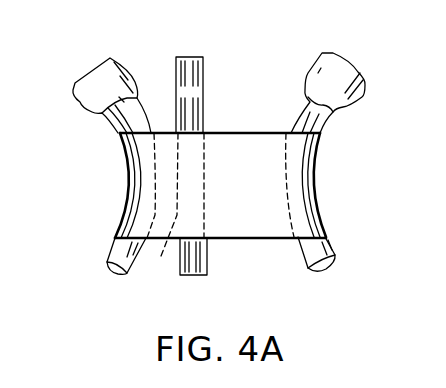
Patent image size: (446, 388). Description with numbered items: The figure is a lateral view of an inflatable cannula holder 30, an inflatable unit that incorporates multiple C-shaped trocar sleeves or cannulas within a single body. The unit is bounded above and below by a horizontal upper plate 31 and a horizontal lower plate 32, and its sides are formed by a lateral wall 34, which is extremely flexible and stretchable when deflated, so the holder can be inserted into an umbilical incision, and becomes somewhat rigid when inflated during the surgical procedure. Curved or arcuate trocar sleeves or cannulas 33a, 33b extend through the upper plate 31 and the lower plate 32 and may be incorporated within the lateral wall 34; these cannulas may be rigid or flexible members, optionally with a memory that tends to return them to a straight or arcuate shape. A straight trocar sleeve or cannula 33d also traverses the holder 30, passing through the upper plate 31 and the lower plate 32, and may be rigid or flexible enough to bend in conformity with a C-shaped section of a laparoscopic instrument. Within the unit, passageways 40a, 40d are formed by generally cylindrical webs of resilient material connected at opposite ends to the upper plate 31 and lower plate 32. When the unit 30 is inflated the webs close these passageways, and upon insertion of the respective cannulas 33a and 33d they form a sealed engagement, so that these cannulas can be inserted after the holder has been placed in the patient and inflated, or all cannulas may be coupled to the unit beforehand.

The inflatable cannula holder 30 is at (326, 178).
The horizontal upper plate 31 is at (220, 130).
The horizontal lower plate 32 is at (223, 238).
The curved trocar sleeve or cannula 33a is at (98, 62).
The curved trocar sleeve or cannula 33b is at (346, 62).
The straight trocar sleeve or cannula 33d is at (202, 72).
The lateral wall 34 is at (128, 183).
The passageway 40a is at (122, 200).
The passageway 40d is at (161, 256).